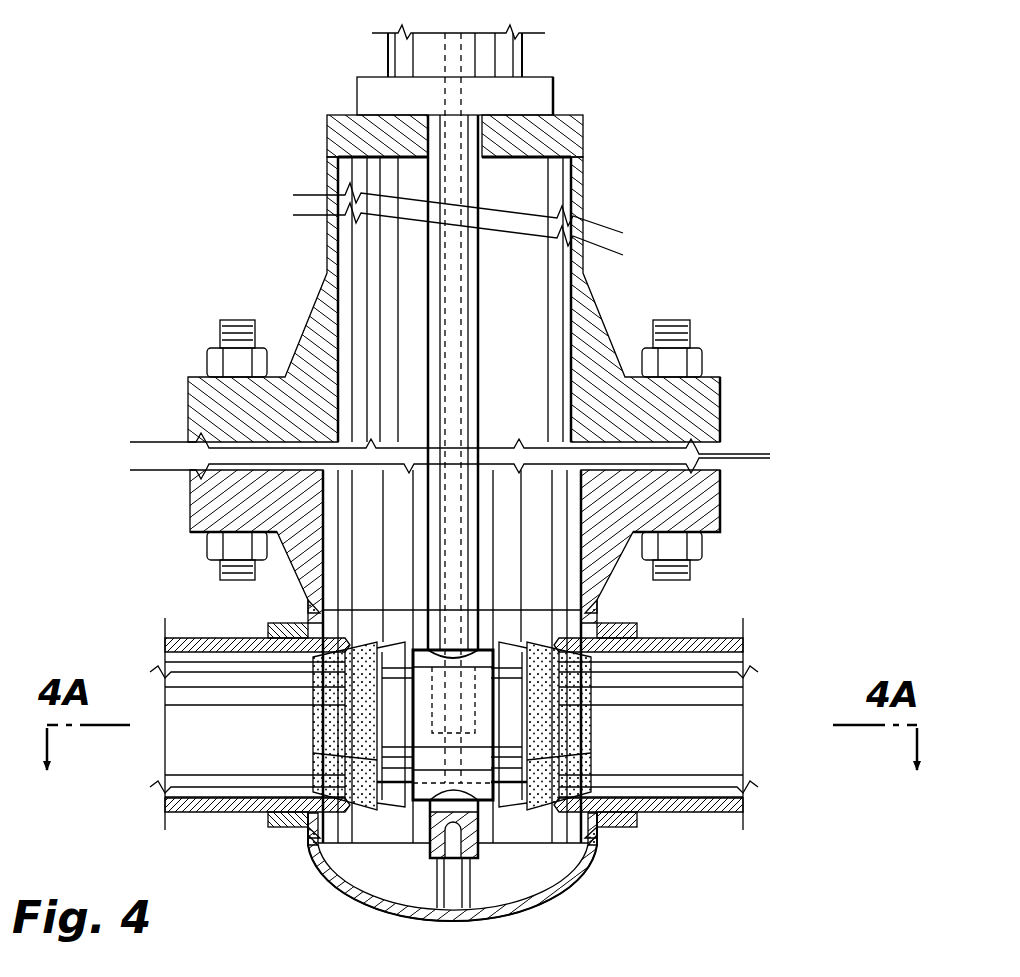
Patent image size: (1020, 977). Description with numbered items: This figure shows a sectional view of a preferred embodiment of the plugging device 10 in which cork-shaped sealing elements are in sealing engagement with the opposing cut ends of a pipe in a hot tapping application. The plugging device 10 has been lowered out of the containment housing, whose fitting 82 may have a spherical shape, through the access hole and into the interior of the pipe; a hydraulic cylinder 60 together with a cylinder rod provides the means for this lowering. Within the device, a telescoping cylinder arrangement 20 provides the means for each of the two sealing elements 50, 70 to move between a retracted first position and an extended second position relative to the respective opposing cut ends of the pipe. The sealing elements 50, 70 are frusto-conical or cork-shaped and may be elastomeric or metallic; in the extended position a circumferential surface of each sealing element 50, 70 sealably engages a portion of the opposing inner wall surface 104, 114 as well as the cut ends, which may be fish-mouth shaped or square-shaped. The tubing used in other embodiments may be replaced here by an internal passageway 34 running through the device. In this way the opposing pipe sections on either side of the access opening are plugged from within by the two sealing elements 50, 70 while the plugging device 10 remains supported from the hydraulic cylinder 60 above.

The plugging device 10 is at (650, 624).
The telescoping cylinder arrangement 20 is at (384, 824).
The internal passageway 34 is at (457, 322).
The sealing element 50 is at (320, 722).
The hydraulic cylinder 60 is at (508, 63).
The sealing element 70 is at (586, 722).
The fitting 82 is at (580, 878).
The inner wall surface 104 is at (165, 787).
The inner wall surface 114 is at (743, 781).